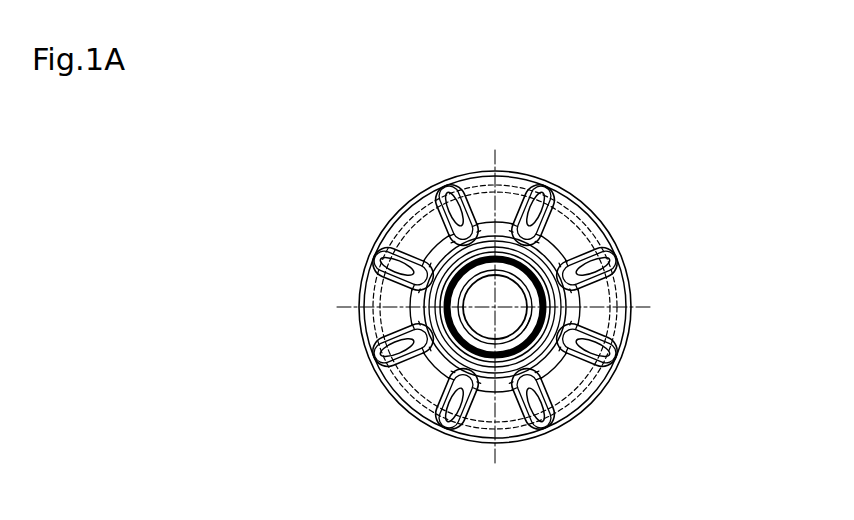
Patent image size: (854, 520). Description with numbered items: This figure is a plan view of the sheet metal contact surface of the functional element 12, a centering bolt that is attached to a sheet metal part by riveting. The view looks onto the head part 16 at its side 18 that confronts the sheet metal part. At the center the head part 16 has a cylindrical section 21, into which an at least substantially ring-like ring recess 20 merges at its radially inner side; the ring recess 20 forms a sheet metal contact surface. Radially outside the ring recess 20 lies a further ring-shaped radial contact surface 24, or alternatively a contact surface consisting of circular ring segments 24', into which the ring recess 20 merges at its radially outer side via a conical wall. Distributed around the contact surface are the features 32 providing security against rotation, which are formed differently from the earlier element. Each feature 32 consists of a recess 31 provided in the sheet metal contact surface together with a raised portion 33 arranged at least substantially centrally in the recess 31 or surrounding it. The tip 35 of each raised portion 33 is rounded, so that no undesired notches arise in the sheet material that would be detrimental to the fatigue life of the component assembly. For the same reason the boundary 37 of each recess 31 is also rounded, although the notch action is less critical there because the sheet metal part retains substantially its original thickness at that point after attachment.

The functional element 12 is at (650, 219).
The head part 16 is at (402, 408).
The side confronting the sheet metal part 18 is at (602, 298).
The ring recess 20 is at (567, 383).
The cylindrical section 21 is at (410, 300).
The radial contact surface 24 is at (446, 307).
The circular ring segments 24' is at (476, 291).
The recess 31 is at (443, 185).
The feature providing security against rotation 32 is at (660, 339).
The raised portion 33 is at (447, 190).
The tip of the raised portion 35 is at (538, 195).
The boundary of the recess 37 is at (472, 198).